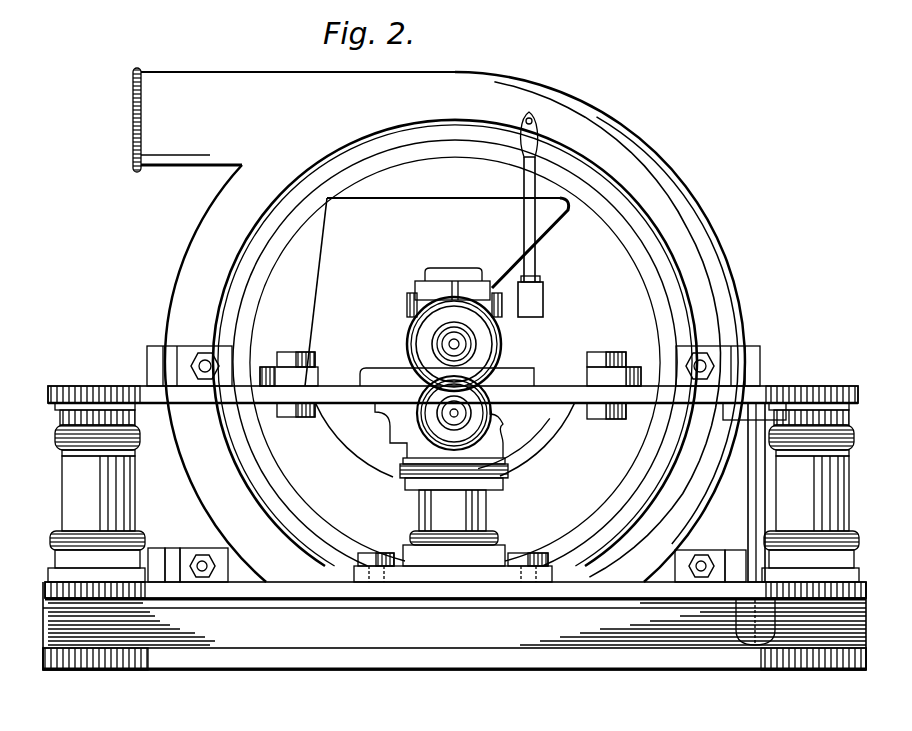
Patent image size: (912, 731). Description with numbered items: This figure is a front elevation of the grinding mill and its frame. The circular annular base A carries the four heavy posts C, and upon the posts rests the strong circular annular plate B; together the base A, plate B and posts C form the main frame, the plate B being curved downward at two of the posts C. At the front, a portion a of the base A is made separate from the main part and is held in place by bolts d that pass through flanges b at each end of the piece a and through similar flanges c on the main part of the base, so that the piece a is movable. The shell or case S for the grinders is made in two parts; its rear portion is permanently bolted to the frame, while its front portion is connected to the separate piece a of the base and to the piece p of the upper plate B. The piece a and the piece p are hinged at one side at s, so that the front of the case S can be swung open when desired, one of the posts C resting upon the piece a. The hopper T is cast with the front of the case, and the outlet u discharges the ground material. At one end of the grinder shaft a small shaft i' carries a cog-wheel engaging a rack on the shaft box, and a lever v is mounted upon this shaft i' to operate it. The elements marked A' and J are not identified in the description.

The outlet u is at (280, 120).
The shell or case for the grinders S is at (455, 327).
The hopper T is at (440, 337).
The lever v is at (529, 197).
The small shaft i' is at (524, 296).
The bearing cap / journal box A' is at (447, 336).
The pulley J is at (454, 413).
The circular annular plate B is at (453, 383).
The piece of the upper part B p is at (421, 438).
The posts C is at (453, 492).
The hinge s is at (759, 505).
The flanges upon the main part of the base c is at (156, 565).
The flange b is at (455, 565).
The bolts d is at (199, 555).
The separate portion of the base a is at (455, 590).
The circular annular base A is at (454, 626).